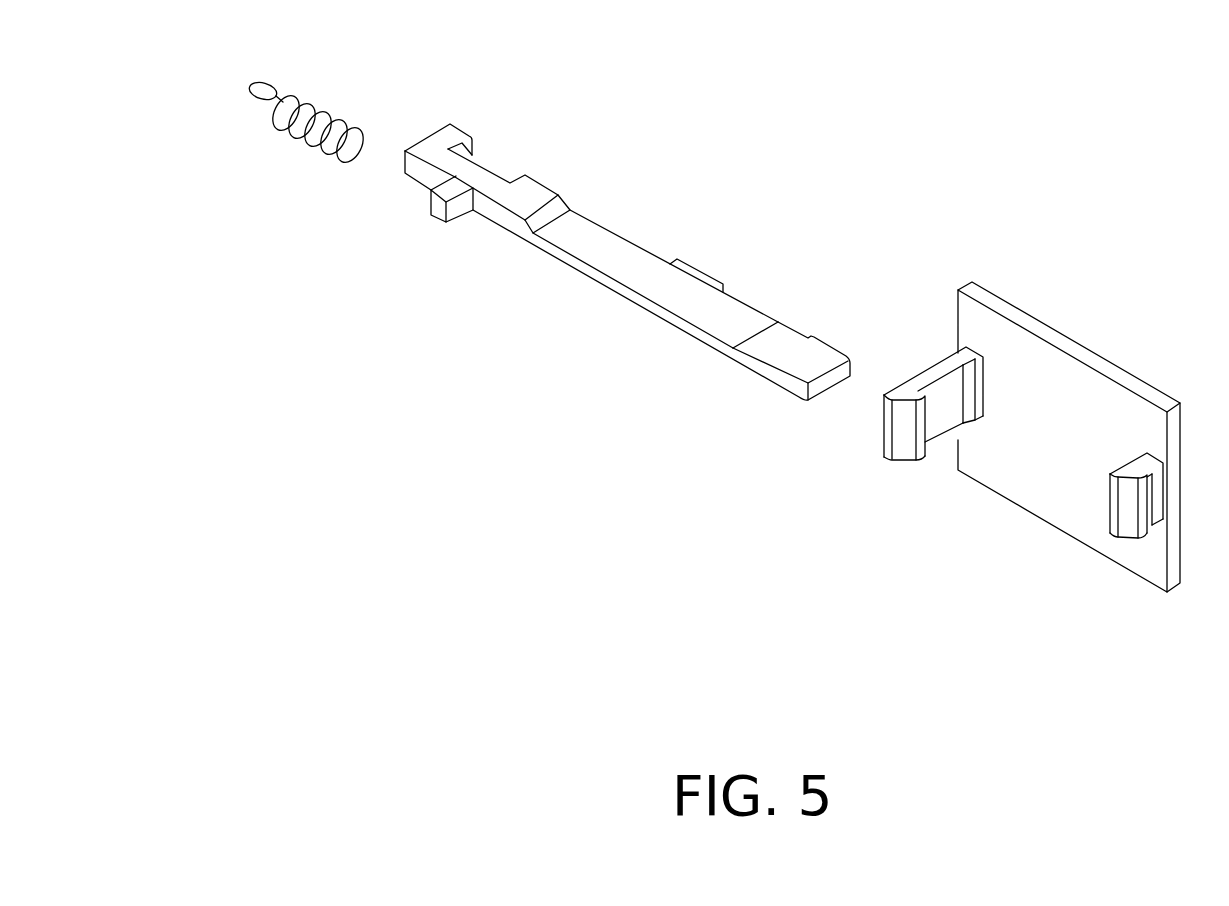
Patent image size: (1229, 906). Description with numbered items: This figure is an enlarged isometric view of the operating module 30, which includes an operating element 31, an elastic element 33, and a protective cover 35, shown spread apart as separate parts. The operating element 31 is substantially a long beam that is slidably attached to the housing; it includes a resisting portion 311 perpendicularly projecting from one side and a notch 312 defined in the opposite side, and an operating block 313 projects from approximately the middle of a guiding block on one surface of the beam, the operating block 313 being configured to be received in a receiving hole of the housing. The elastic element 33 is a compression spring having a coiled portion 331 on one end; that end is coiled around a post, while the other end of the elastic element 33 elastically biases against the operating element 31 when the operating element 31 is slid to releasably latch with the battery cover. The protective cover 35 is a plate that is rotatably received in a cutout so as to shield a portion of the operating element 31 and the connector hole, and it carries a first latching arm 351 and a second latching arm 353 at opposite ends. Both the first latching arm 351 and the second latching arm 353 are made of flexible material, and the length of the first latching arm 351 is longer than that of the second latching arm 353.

The operating module 30 is at (943, 93).
The operating element 31 is at (450, 167).
The resisting portion 311 is at (437, 213).
The notch 312 is at (490, 165).
The operating block 313 is at (700, 283).
The elastic element 33 is at (299, 95).
The coiled portion 331 is at (252, 87).
The protective cover 35 is at (1040, 453).
The first latching arm 351 is at (903, 430).
The second latching arm 353 is at (1127, 507).